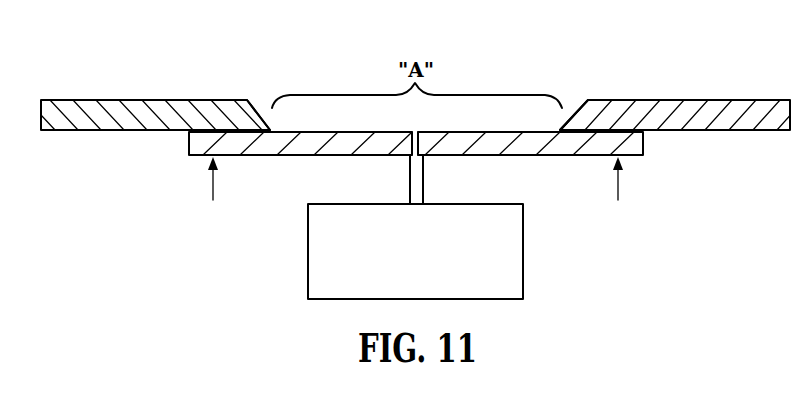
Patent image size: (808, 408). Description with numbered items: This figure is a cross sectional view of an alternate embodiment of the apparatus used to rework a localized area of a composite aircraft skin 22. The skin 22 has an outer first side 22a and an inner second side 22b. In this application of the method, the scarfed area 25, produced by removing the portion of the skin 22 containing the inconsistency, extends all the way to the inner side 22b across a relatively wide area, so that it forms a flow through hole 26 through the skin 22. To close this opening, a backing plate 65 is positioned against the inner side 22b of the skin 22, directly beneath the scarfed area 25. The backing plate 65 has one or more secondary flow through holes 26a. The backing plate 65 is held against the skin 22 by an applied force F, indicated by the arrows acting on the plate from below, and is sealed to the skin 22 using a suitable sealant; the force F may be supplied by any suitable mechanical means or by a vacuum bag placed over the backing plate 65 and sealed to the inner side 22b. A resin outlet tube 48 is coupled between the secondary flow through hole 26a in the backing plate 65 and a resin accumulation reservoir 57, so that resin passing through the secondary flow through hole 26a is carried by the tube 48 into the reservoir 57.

The composite aircraft skin 22 is at (87, 100).
The outer first side 22a is at (192, 92).
The inner second side 22b is at (702, 142).
The scarfed area 25 is at (576, 90).
The flow through hole 26 is at (259, 92).
The secondary flow through hole 26a is at (408, 104).
The resin outlet tube 48 is at (416, 180).
The resin accumulation reservoir 57 is at (523, 272).
The backing plate 65 is at (322, 157).
The applied force F is at (415, 192).